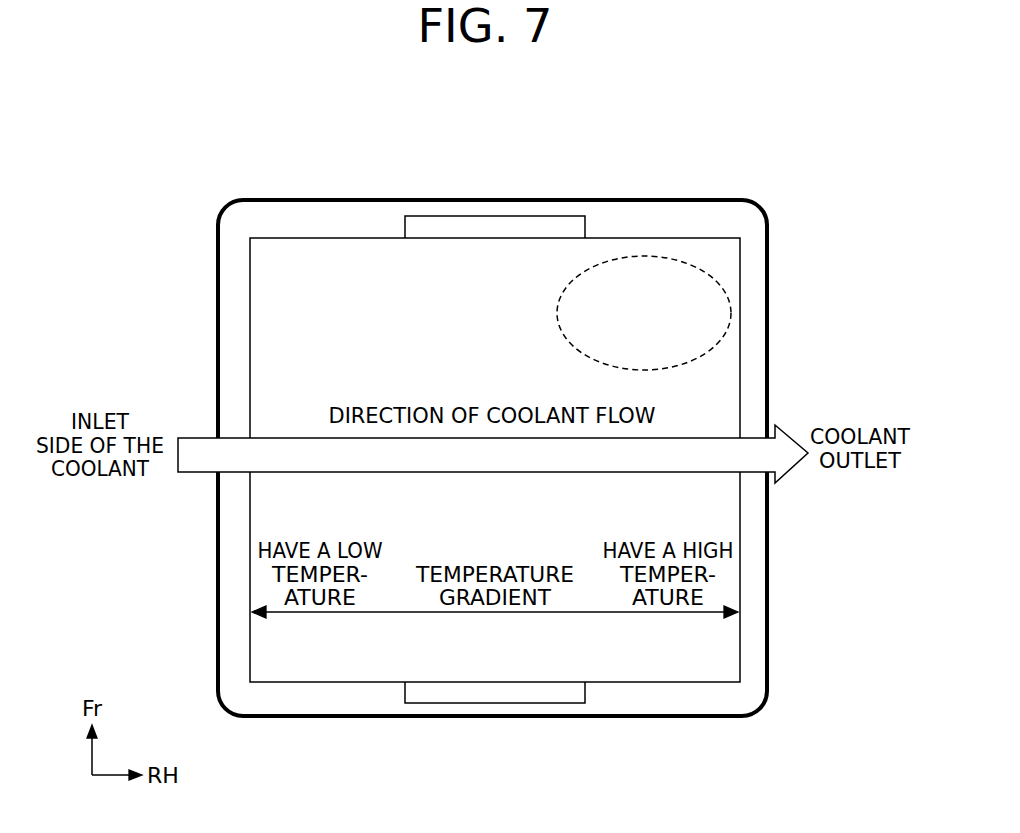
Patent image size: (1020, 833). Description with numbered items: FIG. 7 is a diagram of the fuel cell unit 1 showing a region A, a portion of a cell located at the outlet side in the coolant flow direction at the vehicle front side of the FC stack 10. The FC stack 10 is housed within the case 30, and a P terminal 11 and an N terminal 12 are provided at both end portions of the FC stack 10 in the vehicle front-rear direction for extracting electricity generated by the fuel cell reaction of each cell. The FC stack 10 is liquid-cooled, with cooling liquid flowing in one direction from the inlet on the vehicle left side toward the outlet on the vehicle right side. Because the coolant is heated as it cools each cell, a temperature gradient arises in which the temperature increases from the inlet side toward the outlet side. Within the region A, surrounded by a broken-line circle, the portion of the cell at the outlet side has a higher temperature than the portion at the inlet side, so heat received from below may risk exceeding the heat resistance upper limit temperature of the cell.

The fuel cell unit 1 is at (488, 461).
The FC stack 10 is at (250, 268).
The P terminal 11 is at (485, 216).
The N terminal 12 is at (485, 704).
The case 30 is at (769, 313).
The region A is at (644, 258).